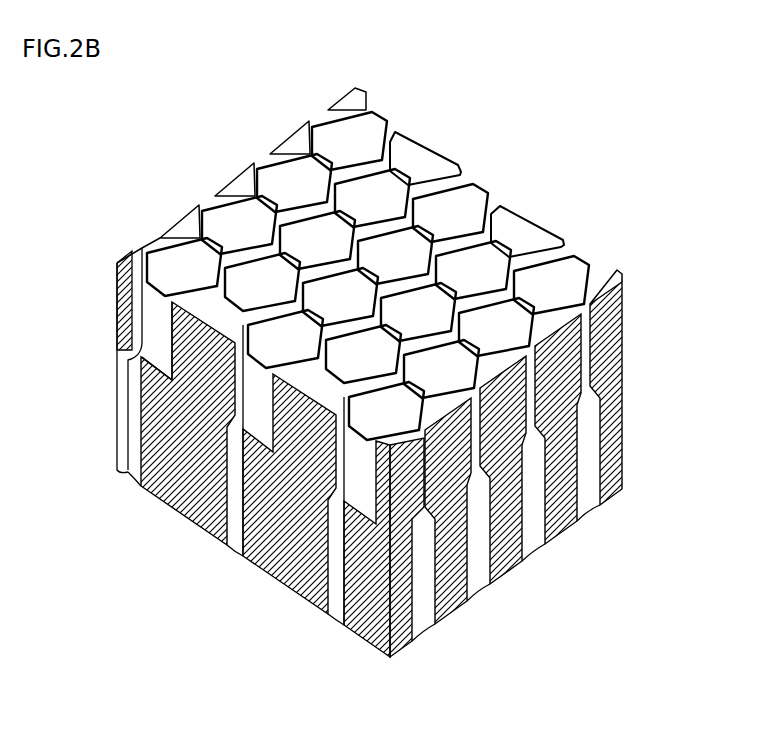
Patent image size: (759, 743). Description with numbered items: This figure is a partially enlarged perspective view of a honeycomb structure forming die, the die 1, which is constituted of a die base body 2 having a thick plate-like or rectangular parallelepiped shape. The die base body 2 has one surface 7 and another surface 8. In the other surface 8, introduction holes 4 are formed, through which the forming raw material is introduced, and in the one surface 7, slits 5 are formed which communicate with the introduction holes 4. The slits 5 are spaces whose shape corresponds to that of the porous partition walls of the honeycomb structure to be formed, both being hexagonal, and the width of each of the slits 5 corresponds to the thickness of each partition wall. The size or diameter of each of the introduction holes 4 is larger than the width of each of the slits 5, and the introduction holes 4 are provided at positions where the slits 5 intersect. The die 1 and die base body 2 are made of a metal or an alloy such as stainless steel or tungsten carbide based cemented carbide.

The die 1 is at (413, 391).
The die base body 2 is at (163, 500).
The introduction holes 4 is at (230, 523).
The slits 5 is at (470, 222).
The one surface 7 is at (423, 152).
The other surface 8 is at (392, 658).